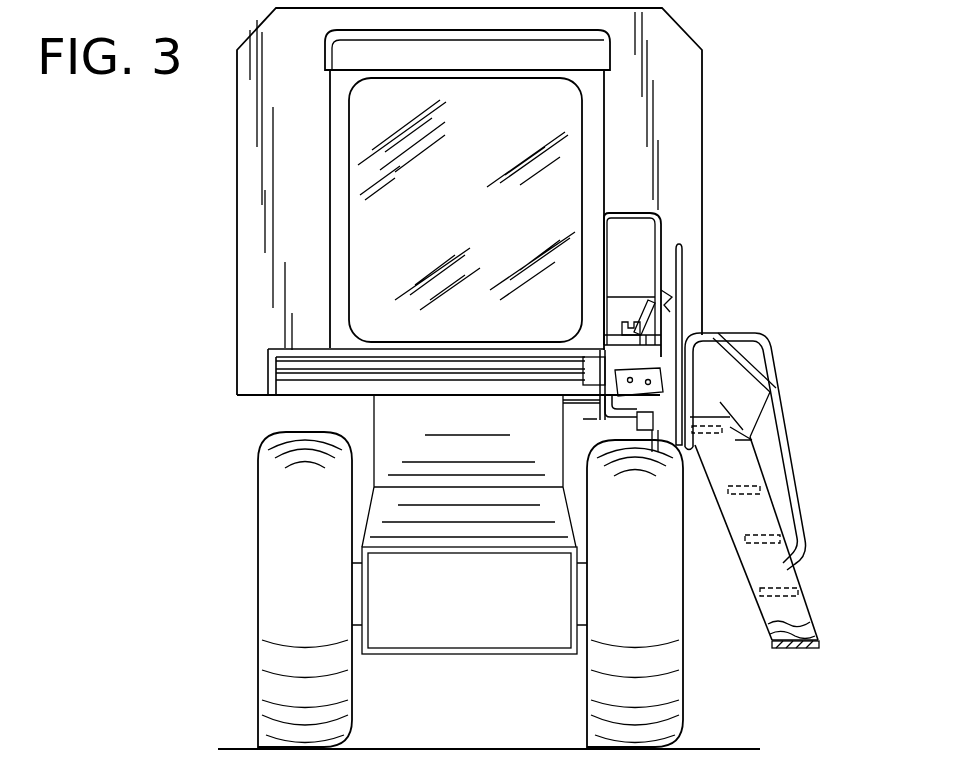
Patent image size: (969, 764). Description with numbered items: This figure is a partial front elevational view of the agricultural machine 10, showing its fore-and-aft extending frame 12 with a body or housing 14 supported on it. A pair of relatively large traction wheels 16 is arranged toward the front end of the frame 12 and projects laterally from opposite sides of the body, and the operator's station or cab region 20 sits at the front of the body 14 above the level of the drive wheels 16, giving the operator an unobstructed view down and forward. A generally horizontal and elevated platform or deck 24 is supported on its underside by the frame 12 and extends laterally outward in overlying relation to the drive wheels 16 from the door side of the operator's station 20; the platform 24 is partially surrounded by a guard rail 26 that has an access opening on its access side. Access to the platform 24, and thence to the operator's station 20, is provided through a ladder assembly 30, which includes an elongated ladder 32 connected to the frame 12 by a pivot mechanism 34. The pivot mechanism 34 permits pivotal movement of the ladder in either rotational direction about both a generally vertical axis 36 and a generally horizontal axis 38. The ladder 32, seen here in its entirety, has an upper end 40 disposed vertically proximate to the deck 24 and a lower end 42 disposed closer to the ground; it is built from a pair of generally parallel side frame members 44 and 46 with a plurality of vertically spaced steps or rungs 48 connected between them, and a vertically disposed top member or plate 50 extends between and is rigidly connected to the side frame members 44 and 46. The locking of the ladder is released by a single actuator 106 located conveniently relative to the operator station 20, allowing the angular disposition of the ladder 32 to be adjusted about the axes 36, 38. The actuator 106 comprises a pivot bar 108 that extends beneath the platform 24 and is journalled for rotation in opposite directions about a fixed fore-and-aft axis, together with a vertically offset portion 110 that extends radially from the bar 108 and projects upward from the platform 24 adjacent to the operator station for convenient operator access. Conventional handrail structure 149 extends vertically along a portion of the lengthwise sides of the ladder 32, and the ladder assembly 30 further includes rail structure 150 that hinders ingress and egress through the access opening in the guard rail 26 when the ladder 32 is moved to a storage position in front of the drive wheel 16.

The machine 10 is at (150, 311).
The frame 12 is at (305, 378).
The body or housing 14 is at (245, 190).
The traction wheels 16 is at (270, 664).
The operator's station or cab region 20 is at (337, 313).
The platform or deck 24 is at (690, 348).
The guard rail 26 is at (620, 212).
The ladder assembly 30 is at (800, 466).
The ladder 32 is at (780, 647).
The pivot mechanism 34 is at (620, 427).
The vertical axis 36 is at (600, 355).
The horizontal axis 38 is at (598, 415).
The upper end 40 is at (704, 413).
The lower end 42 is at (812, 648).
The side frame member 44 is at (757, 555).
The side frame member 46 is at (808, 633).
The steps or rungs 48 is at (772, 638).
The top member or plate 50 is at (730, 428).
The actuator 106 is at (641, 308).
The pivot bar 108 is at (658, 390).
The vertically offset portion 110 is at (640, 332).
The handrail structure 149 is at (774, 357).
The rail structure 150 is at (683, 269).